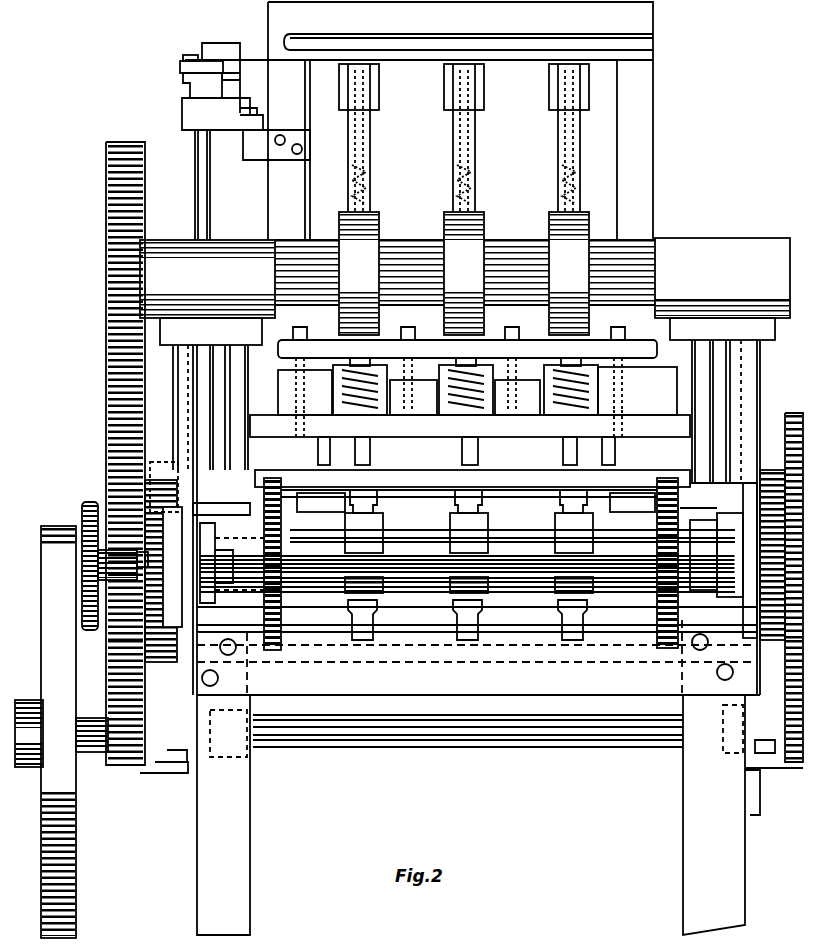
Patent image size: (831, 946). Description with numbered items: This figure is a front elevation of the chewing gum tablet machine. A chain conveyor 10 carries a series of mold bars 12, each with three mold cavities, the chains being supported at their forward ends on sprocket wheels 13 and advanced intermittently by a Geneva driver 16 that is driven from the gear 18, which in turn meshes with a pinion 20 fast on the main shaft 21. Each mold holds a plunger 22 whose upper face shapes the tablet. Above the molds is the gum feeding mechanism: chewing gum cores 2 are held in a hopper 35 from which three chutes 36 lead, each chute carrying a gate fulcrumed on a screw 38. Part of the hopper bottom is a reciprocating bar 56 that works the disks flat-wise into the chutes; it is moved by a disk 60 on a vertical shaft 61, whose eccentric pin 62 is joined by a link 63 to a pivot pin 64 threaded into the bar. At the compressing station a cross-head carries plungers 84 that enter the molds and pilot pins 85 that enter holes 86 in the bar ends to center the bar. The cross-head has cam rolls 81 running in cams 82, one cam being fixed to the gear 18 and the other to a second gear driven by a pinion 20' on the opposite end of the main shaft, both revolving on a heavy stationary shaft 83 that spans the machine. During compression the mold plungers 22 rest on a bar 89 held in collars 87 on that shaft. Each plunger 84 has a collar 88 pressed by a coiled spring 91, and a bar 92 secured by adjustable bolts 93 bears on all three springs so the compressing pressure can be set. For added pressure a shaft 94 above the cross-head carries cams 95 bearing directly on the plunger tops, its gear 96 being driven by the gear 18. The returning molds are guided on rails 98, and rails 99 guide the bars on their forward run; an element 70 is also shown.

The chewing gum core 2 is at (372, 190).
The chain conveyor 10 is at (690, 503).
The mold bar 12 is at (503, 470).
The sprocket wheel 13 is at (683, 520).
The Geneva driver 16 is at (221, 645).
The gear 18 is at (785, 425).
The pinion 20 is at (93, 732).
The pinion 20' is at (774, 727).
The main shaft 21 is at (305, 750).
The plunger 22 is at (450, 500).
The hopper 35 is at (650, 26).
The chute 36 is at (552, 132).
The screw 38 is at (660, 670).
The reciprocating bar 56 is at (228, 48).
The disk 60 is at (184, 78).
The vertical shaft 61 is at (212, 190).
The eccentric pin 62 is at (185, 56).
The link 63 is at (180, 66).
The pivot pin 64 is at (240, 78).
The post 70 is at (437, 437).
The cam roll 81 is at (160, 466).
The cam 82 is at (772, 650).
The stationary shaft 83 is at (283, 604).
The plunger 84 is at (545, 437).
The pilot pin 85 is at (635, 428).
The hole 86 is at (615, 450).
The collar 87 is at (565, 596).
The collar 88 is at (300, 408).
The bar 89 is at (530, 517).
The coiled spring 91 is at (478, 362).
The bar 92 is at (640, 347).
The bolt 93 is at (620, 368).
The shaft 94 is at (620, 266).
The cam 95 is at (553, 236).
The gear 96 is at (103, 235).
The rail 98 is at (277, 668).
The rail 99 is at (627, 502).